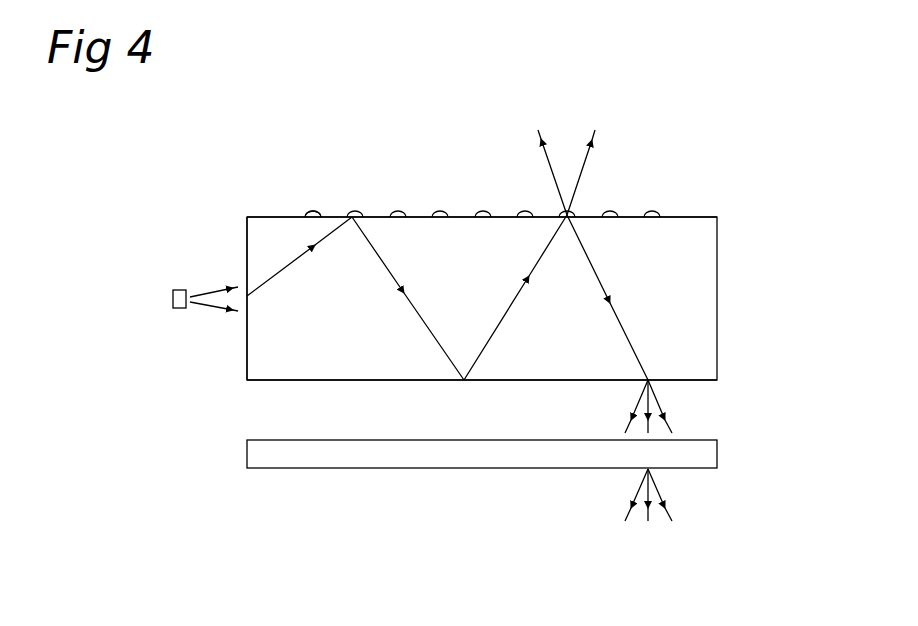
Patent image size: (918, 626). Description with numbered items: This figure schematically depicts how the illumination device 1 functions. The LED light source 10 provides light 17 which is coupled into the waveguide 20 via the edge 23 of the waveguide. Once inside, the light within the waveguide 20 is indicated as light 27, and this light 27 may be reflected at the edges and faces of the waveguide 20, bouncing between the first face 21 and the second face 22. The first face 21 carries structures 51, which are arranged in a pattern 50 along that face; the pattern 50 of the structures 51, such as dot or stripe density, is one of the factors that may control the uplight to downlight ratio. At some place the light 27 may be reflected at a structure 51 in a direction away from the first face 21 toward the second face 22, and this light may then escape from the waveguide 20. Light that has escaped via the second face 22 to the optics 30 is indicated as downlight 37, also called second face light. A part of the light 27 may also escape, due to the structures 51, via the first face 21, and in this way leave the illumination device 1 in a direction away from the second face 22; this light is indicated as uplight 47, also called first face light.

The illumination device 1 is at (463, 326).
The LED light source 10 is at (173, 297).
The light 17 is at (216, 306).
The waveguide 20 is at (447, 283).
The first face 21 is at (462, 218).
The second face 22 is at (300, 382).
The edge 23 is at (247, 255).
The light within the waveguide 27 is at (427, 327).
The optics 30 is at (256, 456).
The downlight 37 is at (663, 403).
The uplight 47 is at (585, 166).
The pattern 50 is at (283, 211).
The structures 51 is at (313, 211).